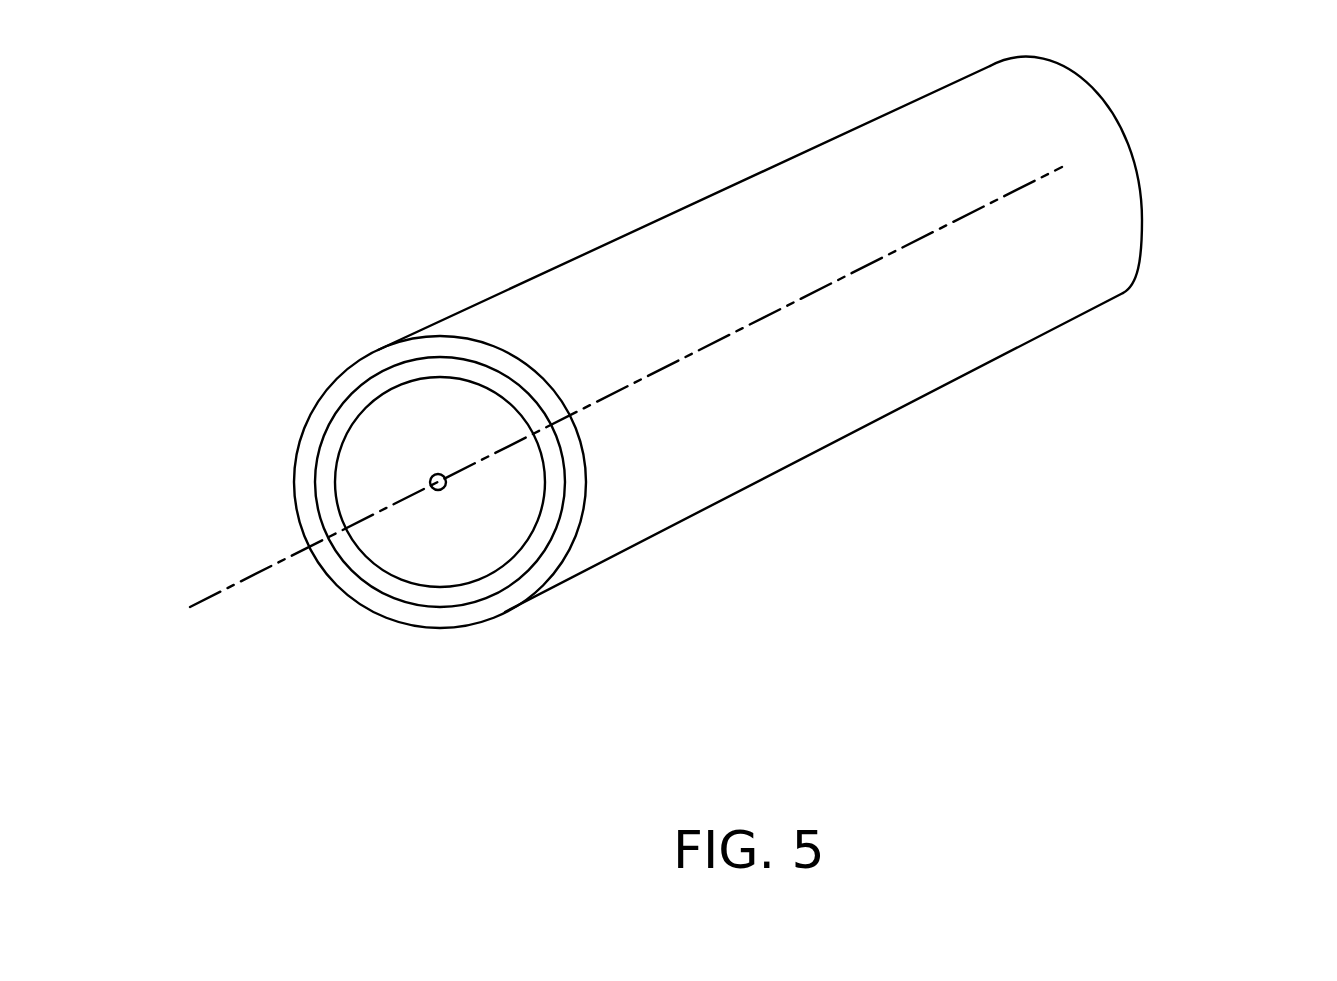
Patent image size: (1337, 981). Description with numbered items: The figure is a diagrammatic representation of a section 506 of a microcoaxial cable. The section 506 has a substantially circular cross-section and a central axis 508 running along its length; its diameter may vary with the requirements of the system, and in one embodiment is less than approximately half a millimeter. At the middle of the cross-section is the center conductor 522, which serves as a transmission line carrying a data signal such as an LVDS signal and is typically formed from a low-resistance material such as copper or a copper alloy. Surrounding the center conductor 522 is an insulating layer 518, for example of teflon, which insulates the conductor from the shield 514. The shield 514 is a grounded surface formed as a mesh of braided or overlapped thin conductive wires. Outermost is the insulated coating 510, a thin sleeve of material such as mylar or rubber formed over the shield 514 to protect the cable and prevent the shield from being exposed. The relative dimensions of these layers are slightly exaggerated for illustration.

The section 506 is at (1192, 130).
The central axis 508 is at (260, 573).
The insulated coating 510 is at (490, 605).
The shield 514 is at (533, 550).
The insulating layer 518 is at (447, 563).
The center conductor 522 is at (438, 474).